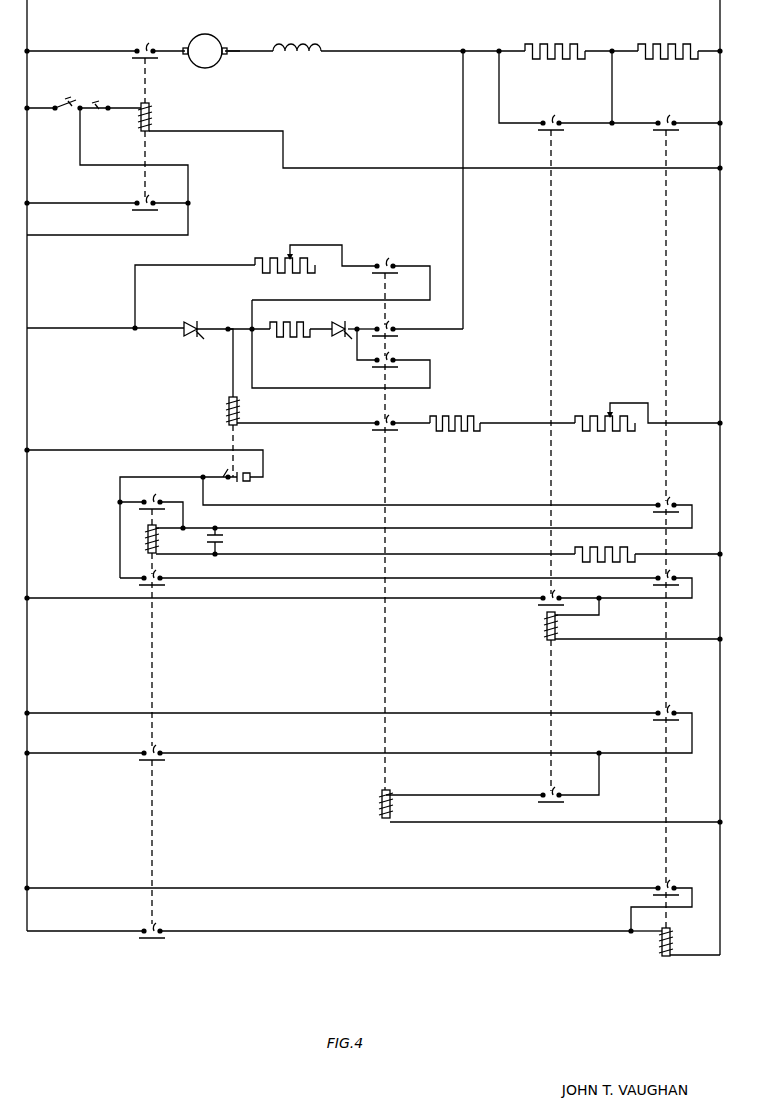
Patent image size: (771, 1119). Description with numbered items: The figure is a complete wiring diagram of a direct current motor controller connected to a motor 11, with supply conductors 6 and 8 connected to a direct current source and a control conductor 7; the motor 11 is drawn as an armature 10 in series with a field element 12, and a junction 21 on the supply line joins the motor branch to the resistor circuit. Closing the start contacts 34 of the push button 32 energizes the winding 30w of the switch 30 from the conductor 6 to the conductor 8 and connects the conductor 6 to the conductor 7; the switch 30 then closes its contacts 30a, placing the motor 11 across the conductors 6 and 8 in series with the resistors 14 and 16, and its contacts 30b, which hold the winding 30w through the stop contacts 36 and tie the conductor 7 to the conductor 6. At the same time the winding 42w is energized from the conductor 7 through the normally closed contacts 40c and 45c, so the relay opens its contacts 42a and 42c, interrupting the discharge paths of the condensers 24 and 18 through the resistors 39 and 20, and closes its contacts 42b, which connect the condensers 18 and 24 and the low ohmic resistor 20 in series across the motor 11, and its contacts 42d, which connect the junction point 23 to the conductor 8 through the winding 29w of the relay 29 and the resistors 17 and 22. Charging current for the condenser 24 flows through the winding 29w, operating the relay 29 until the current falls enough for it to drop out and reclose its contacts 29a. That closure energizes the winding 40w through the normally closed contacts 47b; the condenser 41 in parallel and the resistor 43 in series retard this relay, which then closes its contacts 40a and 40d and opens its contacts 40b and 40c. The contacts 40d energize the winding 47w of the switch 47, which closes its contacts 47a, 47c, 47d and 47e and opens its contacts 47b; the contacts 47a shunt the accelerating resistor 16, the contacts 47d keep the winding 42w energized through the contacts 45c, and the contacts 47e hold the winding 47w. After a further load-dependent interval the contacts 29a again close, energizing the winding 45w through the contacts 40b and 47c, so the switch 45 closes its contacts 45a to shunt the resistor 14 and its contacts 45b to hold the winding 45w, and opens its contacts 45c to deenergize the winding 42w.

The conductor 6 is at (27, 20).
The conductor 7 is at (27, 252).
The conductor 8 is at (720, 21).
The motor 10 is at (207, 34).
The motor 11 is at (240, 44).
The reactor 12 is at (296, 58).
The resistor 14 is at (560, 46).
The accelerating resistor 16 is at (672, 46).
The resistor 17 is at (457, 431).
The condenser 18 is at (346, 322).
The resistor 20 is at (300, 337).
The conductor 21 is at (463, 48).
The resistor 22 is at (602, 431).
The junction point 23 is at (252, 325).
The condenser 24 is at (195, 324).
The relay 29 is at (232, 435).
The contacts 29a is at (245, 484).
The winding 29w is at (240, 411).
The switch 30 is at (146, 88).
The contacts 30a is at (140, 46).
The contacts 30b is at (139, 201).
The winding 30w is at (150, 113).
The push button 32 is at (76, 93).
The start contacts 34 is at (58, 112).
The stop contacts 36 is at (106, 112).
The resistor 39 is at (262, 262).
The contacts 40a is at (155, 496).
The contacts 40b is at (162, 580).
The contacts 40c is at (142, 748).
The contacts 40d is at (161, 927).
The winding 40w is at (157, 541).
The condenser 41 is at (224, 539).
The contacts 42a is at (387, 262).
The contacts 42b is at (394, 328).
The contacts 42c is at (395, 357).
The contacts 42d is at (394, 418).
The winding 42w is at (382, 800).
The resistor 43 is at (622, 550).
The electro-responsive switch 45 is at (552, 258).
The contacts 45a is at (551, 118).
The contacts 45b is at (541, 596).
The contacts 45c is at (542, 792).
The winding 45w is at (547, 628).
The electro-responsive switch 47 is at (667, 318).
The contacts 47a is at (666, 118).
The contacts 47b is at (669, 501).
The contacts 47c is at (656, 575).
The contacts 47d is at (660, 708).
The contacts 47e is at (659, 883).
The winding 47w is at (660, 946).